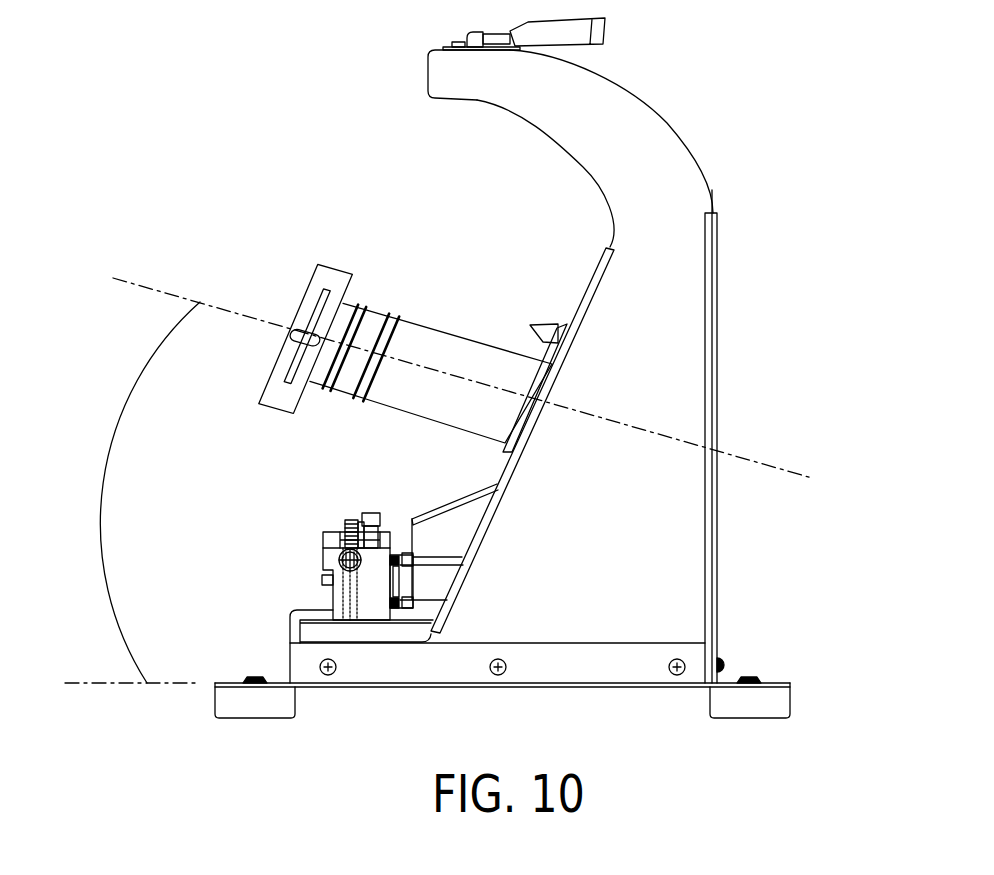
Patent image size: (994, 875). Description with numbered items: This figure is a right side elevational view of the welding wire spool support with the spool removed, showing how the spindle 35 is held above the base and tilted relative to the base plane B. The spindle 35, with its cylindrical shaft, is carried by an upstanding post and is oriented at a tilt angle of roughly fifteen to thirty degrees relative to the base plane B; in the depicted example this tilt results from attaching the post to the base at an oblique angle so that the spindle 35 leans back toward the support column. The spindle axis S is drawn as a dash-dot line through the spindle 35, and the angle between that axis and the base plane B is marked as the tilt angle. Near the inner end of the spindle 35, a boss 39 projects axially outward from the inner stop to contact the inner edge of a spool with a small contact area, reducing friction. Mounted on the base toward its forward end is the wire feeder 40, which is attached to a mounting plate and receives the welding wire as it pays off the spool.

The spindle 35 is at (367, 397).
The boss 39 is at (531, 326).
The wire feeder 40 is at (303, 537).
The detector axis S is at (170, 290).
The base plane B is at (105, 684).